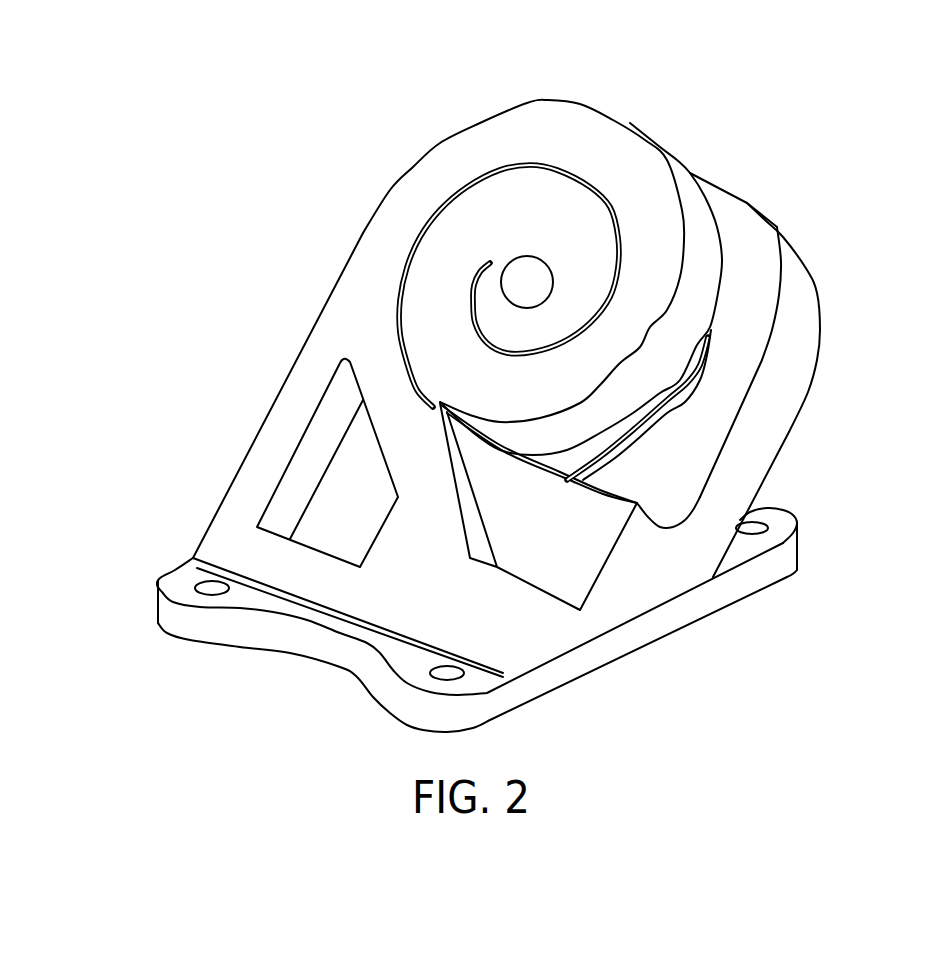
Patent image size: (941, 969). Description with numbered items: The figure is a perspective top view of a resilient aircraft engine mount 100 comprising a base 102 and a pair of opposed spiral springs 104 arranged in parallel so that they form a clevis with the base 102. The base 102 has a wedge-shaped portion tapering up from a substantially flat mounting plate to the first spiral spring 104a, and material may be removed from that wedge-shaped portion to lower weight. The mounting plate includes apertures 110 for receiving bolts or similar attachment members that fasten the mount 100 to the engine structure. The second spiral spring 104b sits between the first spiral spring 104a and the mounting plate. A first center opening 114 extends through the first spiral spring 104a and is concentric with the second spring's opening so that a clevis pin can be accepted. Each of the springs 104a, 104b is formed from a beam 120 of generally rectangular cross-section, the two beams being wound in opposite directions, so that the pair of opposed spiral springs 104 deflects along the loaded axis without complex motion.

The resilient aircraft engine mount 100 is at (352, 149).
The base 102 is at (668, 585).
The pair of opposed spiral springs 104 is at (738, 178).
The first spiral spring 104a is at (363, 233).
The second spiral spring 104b is at (820, 310).
The apertures 110 is at (205, 588).
The first center opening 114 is at (527, 256).
The beam 120 is at (613, 127).